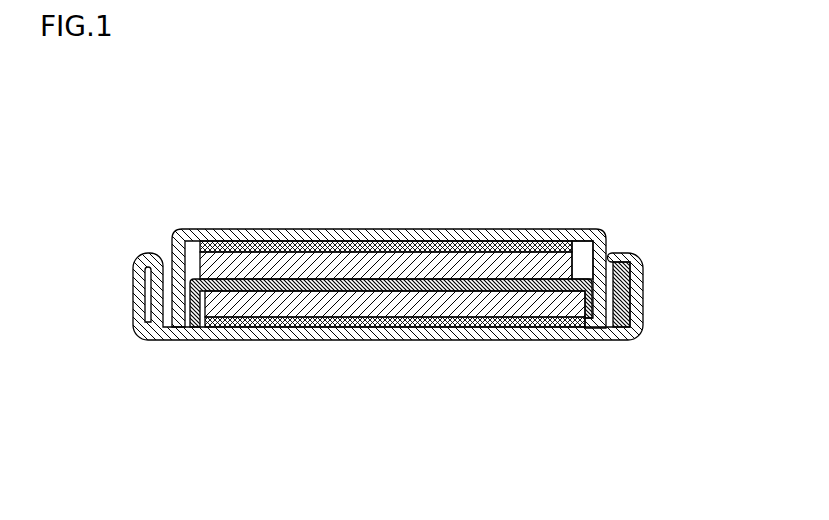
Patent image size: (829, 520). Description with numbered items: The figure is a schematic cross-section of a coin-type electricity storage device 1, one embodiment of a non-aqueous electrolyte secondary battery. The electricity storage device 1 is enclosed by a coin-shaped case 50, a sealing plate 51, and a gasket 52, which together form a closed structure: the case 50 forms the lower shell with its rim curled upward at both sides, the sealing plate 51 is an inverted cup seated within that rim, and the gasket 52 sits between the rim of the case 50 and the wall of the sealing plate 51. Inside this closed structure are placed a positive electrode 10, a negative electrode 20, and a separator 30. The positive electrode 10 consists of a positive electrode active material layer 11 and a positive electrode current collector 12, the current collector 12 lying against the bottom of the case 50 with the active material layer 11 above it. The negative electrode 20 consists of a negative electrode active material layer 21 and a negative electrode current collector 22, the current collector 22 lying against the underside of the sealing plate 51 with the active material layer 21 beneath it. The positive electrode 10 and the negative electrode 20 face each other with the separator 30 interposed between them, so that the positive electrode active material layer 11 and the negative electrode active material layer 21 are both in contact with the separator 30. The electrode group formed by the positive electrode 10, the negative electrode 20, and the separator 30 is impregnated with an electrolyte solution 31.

The electricity storage device 1 is at (527, 87).
The positive electrode 10 is at (388, 424).
The positive electrode active material layer 11 is at (508, 310).
The positive electrode current collector 12 is at (410, 324).
The negative electrode 20 is at (387, 163).
The negative electrode active material layer 21 is at (300, 265).
The negative electrode current collector 22 is at (366, 248).
The separator 30 is at (538, 284).
The electrolyte solution 31 is at (586, 268).
The case 50 is at (240, 342).
The sealing plate 51 is at (208, 234).
The gasket 52 is at (621, 344).